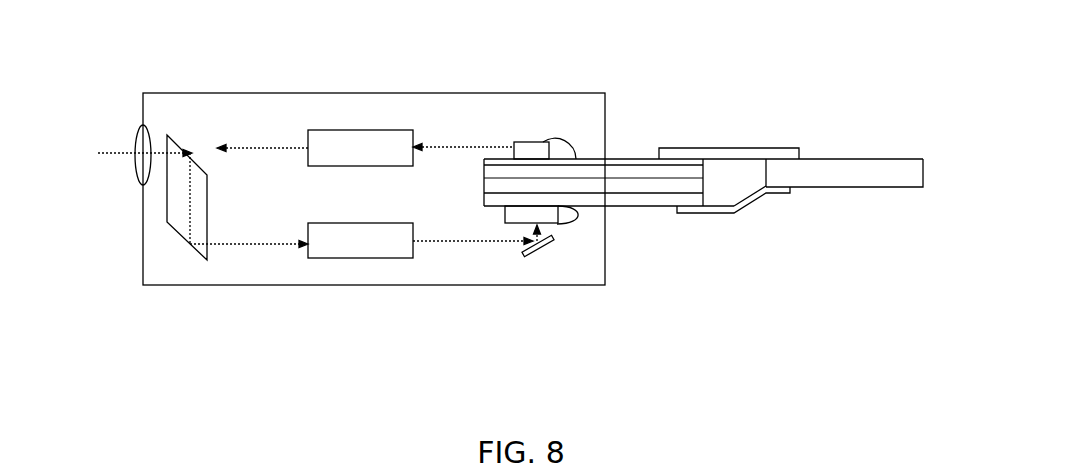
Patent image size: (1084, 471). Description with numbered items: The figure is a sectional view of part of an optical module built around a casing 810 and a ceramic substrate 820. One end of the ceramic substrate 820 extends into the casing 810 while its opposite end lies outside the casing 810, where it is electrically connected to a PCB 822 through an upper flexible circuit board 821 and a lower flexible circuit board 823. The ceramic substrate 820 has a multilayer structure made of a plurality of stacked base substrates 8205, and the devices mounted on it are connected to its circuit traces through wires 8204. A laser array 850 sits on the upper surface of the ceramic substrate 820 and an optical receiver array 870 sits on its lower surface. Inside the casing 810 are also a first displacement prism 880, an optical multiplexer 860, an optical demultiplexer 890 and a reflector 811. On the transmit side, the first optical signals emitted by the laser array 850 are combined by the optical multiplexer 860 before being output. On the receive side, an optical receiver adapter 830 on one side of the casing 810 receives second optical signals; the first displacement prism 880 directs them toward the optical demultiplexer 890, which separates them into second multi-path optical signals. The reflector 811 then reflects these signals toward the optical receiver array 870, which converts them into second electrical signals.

The casing 810 is at (575, 120).
The reflector 811 is at (525, 252).
The ceramic substrate 820 is at (645, 207).
The flexible circuit board 821 is at (706, 157).
The PCB 822 is at (820, 170).
The flexible circuit board 823 is at (733, 213).
The wire 8204 is at (560, 138).
The base substrate 8205 is at (618, 163).
The optical receiver adapter 830 is at (142, 135).
The laser array 850 is at (530, 147).
The optical multiplexer 860 is at (379, 143).
The optical receiver array 870 is at (545, 211).
The first displacement prism 880 is at (190, 198).
The optical demultiplexer 890 is at (372, 247).